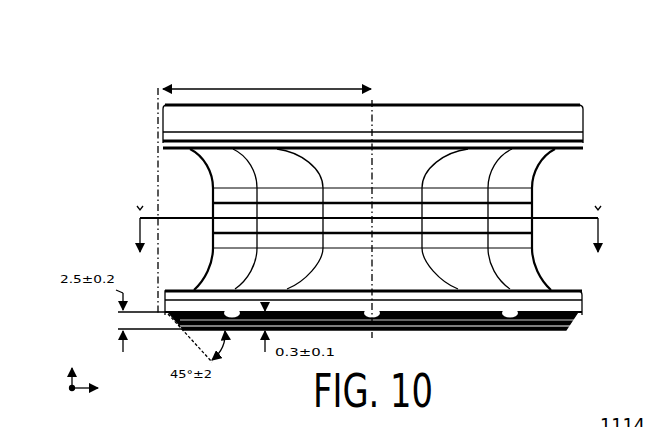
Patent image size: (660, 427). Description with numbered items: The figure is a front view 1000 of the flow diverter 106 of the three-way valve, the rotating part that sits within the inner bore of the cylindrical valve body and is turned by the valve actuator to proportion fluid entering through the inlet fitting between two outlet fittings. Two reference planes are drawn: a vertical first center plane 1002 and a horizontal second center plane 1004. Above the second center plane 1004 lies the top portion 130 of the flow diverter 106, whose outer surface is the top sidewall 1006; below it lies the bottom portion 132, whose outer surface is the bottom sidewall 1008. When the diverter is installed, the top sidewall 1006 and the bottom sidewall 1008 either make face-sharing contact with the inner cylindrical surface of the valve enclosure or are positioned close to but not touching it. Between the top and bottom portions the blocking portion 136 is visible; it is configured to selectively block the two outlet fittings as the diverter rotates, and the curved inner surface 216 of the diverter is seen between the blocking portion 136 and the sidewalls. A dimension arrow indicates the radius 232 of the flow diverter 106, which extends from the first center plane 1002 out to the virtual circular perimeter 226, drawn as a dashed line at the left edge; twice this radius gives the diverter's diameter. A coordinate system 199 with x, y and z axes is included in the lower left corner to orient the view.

The front view 1000 is at (120, 66).
The flow diverter 106 is at (508, 80).
The radius 232 is at (236, 88).
The virtual circular perimeter 226 is at (157, 180).
The top portion 130 is at (583, 110).
The top sidewall 1006 is at (412, 106).
The inner surface 216 is at (478, 265).
The blocking portion 136 is at (535, 173).
The second center plane 1004 is at (385, 215).
The bottom portion 132 is at (581, 296).
The bottom sidewall 1008 is at (515, 300).
The first center plane 1002 is at (375, 292).
The coordinate system 199 is at (90, 354).